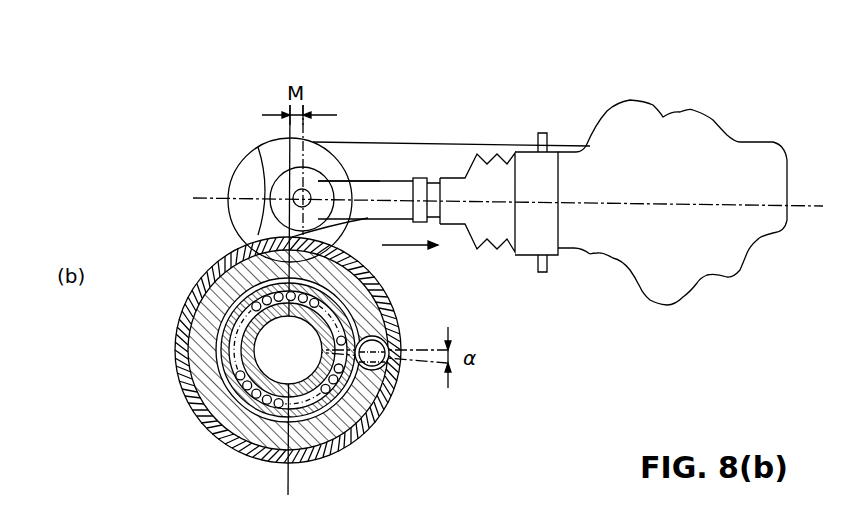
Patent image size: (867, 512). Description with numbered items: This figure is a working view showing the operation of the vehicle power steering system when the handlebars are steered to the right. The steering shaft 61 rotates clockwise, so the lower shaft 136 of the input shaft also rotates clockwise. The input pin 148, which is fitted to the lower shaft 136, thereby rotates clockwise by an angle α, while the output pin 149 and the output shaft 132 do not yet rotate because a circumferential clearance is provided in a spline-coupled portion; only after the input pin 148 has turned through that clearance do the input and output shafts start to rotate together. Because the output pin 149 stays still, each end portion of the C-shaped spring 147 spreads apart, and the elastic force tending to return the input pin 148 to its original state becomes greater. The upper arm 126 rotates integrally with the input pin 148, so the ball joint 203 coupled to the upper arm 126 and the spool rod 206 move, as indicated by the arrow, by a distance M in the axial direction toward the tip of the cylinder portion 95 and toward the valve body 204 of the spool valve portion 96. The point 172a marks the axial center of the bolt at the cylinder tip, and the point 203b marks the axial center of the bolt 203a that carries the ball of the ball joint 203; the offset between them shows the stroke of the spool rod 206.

The steering shaft 61 is at (203, 270).
The output shaft 132 is at (200, 365).
The lower shaft 136 is at (350, 405).
The output pin 149 is at (380, 307).
The input pin 148 is at (385, 320).
The C-shaped spring 147 is at (380, 392).
The axial center of the bolt 172a is at (258, 145).
The upper arm 126 is at (270, 190).
The ball joint 203 is at (392, 178).
The bolt 203a is at (349, 180).
The axial center of the bolt with a ball 203b is at (367, 180).
The spool rod 206 is at (436, 184).
The cylinder portion 95 is at (512, 141).
The valve body 204 is at (653, 103).
The spool valve portion 96 is at (732, 135).